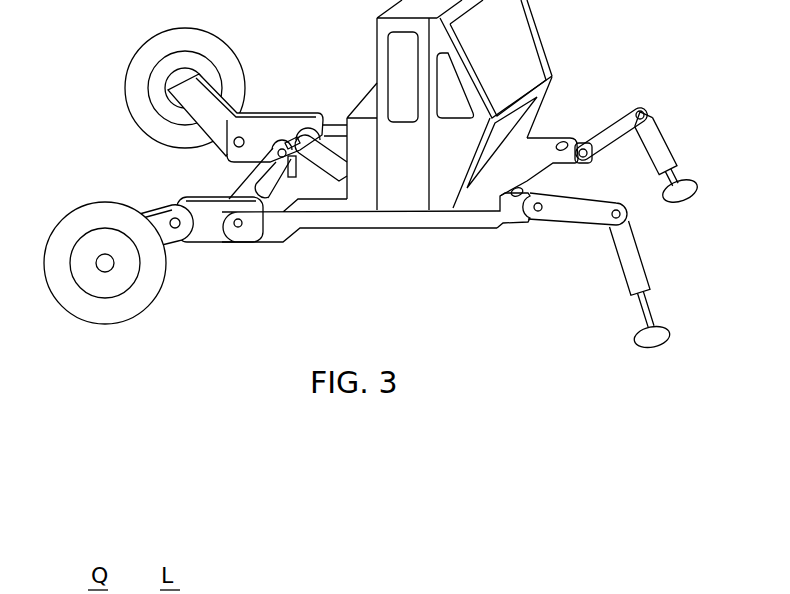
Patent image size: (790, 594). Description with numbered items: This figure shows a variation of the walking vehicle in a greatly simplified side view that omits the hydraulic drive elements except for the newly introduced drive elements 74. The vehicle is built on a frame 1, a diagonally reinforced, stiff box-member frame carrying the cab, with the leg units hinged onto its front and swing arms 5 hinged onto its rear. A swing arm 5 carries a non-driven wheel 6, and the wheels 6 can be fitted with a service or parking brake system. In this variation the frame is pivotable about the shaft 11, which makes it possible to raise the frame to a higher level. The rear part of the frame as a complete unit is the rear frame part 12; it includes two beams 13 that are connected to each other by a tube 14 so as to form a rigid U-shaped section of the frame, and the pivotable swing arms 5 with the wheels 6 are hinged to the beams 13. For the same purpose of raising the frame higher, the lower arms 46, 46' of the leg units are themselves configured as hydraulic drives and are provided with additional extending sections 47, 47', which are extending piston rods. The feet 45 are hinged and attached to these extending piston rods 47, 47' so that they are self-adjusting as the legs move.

The frame 1 is at (363, 232).
The swing arm 5 is at (160, 218).
The non-driven wheel 6 is at (193, 37).
The shaft 11 is at (239, 230).
The rear part of the frame 12 is at (262, 104).
The beam 13 is at (278, 123).
The tube 14 is at (248, 187).
The drive element 74 is at (327, 157).
The foot 45 is at (637, 340).
The lower arm 46 is at (589, 244).
The extending section 47 is at (619, 309).
The lower arm 46' is at (638, 141).
The extending section 47' is at (690, 175).